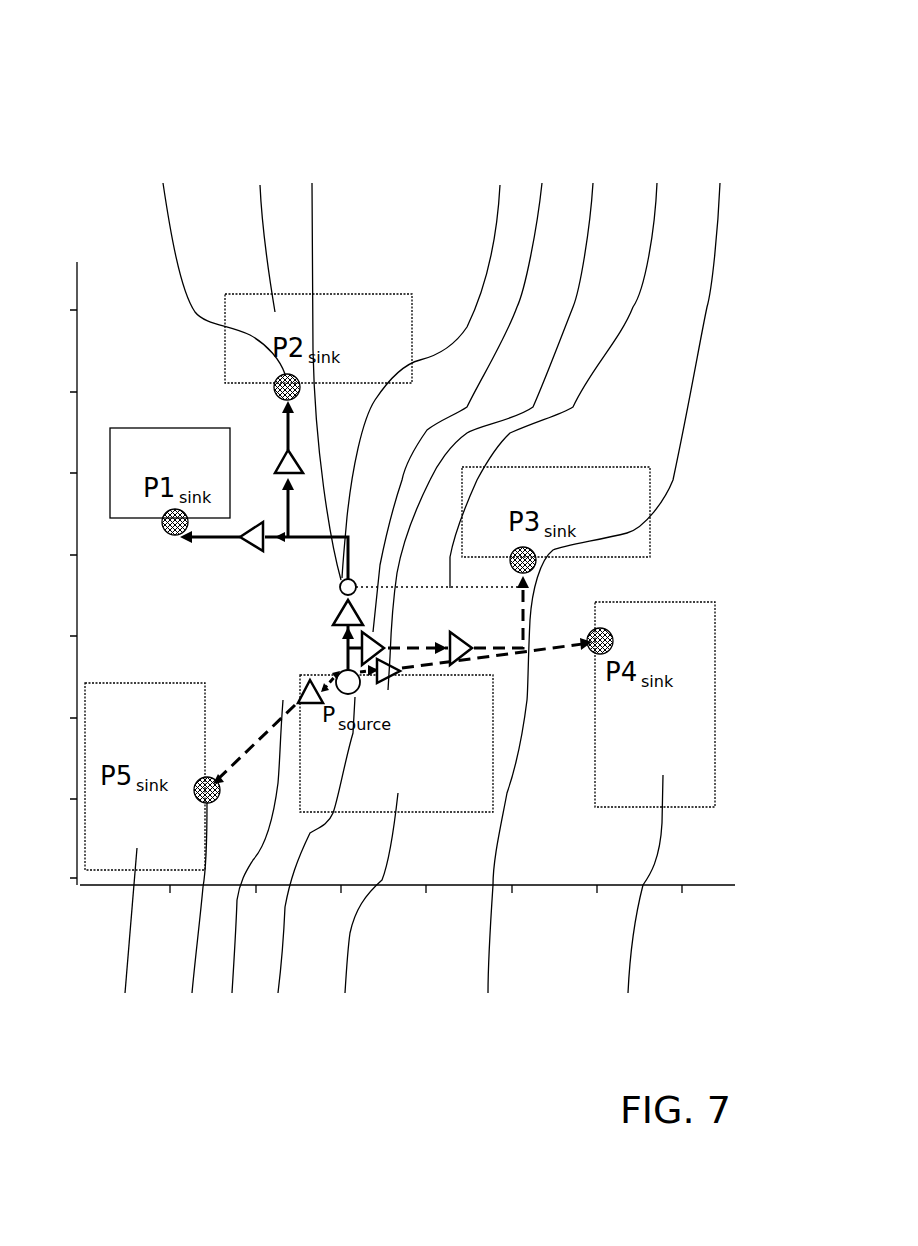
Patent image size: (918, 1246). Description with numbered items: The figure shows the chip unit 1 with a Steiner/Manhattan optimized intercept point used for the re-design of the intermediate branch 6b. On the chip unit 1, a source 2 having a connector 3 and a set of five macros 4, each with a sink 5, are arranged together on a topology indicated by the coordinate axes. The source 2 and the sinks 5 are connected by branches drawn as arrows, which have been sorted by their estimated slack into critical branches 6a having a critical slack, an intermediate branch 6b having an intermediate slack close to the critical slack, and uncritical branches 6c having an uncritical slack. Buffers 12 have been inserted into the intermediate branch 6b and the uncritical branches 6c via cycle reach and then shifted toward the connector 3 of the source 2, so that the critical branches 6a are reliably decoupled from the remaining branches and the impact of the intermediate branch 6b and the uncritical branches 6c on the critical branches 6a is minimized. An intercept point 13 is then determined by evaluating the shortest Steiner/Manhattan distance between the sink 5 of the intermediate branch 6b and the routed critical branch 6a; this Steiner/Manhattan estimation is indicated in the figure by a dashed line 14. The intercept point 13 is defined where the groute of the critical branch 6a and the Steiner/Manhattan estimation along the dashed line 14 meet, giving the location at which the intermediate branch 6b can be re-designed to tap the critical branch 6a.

The chip unit 1 is at (683, 97).
The source 2 is at (367, 913).
The connector 3 is at (314, 865).
The macro 4 is at (385, 590).
The sink 5 is at (326, 590).
The critical branch 6a is at (429, 363).
The intermediate branch 6b is at (612, 570).
The uncritical branch 6c is at (249, 866).
The buffer 12 is at (488, 419).
The intercept point 13 is at (317, 364).
The dashed line 14 is at (561, 368).